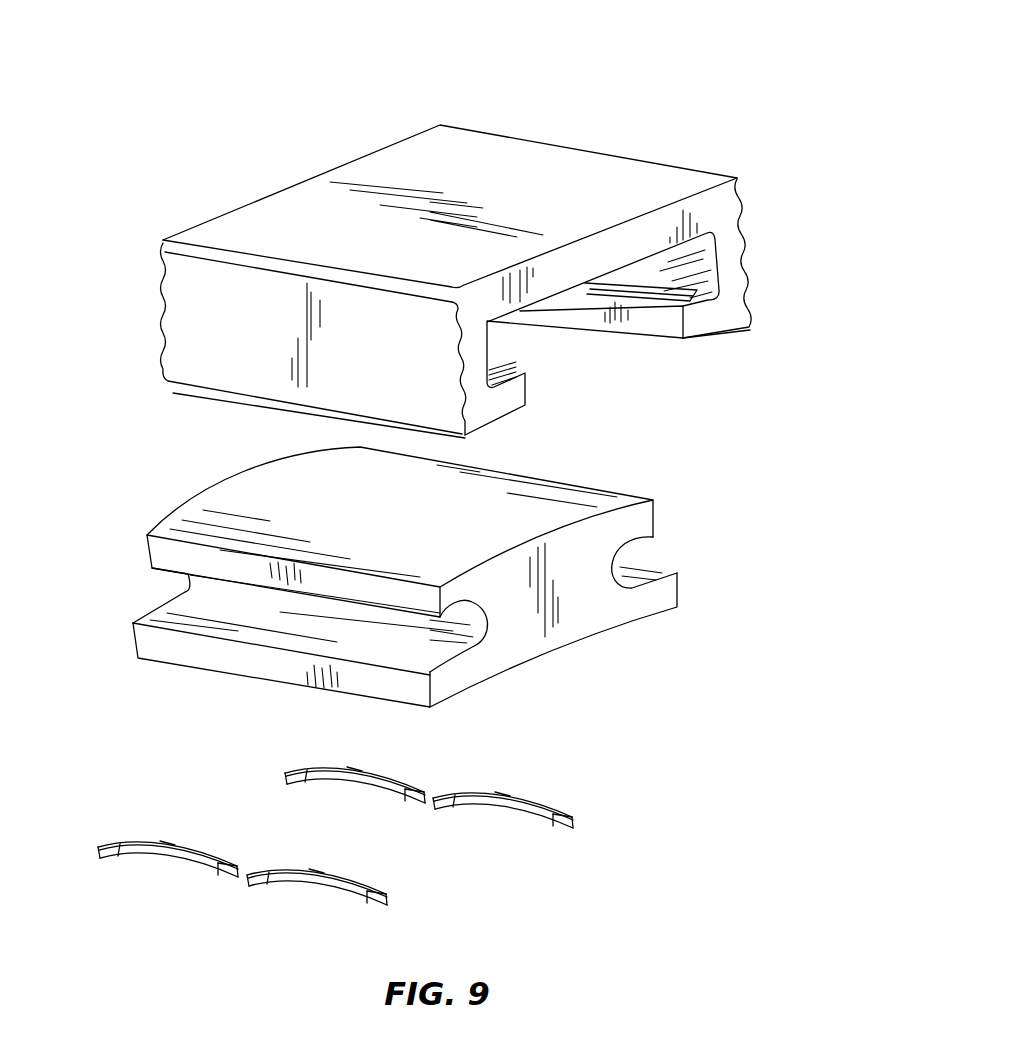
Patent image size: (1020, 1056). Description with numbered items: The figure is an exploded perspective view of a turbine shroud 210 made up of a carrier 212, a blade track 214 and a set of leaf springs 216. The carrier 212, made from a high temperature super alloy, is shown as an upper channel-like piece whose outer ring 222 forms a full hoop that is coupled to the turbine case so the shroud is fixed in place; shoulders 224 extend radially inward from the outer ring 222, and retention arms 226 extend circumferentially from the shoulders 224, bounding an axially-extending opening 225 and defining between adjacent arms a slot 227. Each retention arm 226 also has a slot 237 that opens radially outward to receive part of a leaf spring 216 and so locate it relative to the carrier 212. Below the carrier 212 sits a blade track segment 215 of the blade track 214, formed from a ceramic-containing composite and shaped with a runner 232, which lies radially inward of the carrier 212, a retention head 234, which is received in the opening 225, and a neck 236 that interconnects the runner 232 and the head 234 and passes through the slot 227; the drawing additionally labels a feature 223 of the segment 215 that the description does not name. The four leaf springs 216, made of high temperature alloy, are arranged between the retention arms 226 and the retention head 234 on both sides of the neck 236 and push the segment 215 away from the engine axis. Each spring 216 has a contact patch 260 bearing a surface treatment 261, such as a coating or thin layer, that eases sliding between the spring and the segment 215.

The turbine shroud 210 is at (622, 90).
The carrier 212 is at (670, 150).
The blade track 214 is at (688, 503).
The blade track segment 215 is at (704, 593).
The leaf spring 216 is at (421, 775).
The outer ring 222 is at (608, 240).
The groove 223 is at (638, 553).
The shoulder 224 is at (742, 242).
The axially-extending opening 225 is at (694, 267).
The retention arm 226 is at (718, 333).
The slot 227 is at (625, 382).
The runner 232 is at (557, 638).
The retention head 234 is at (614, 536).
The neck 236 is at (183, 592).
The slot 237 is at (507, 367).
The contact patch 260 is at (336, 763).
The surface treatment 261 is at (383, 766).